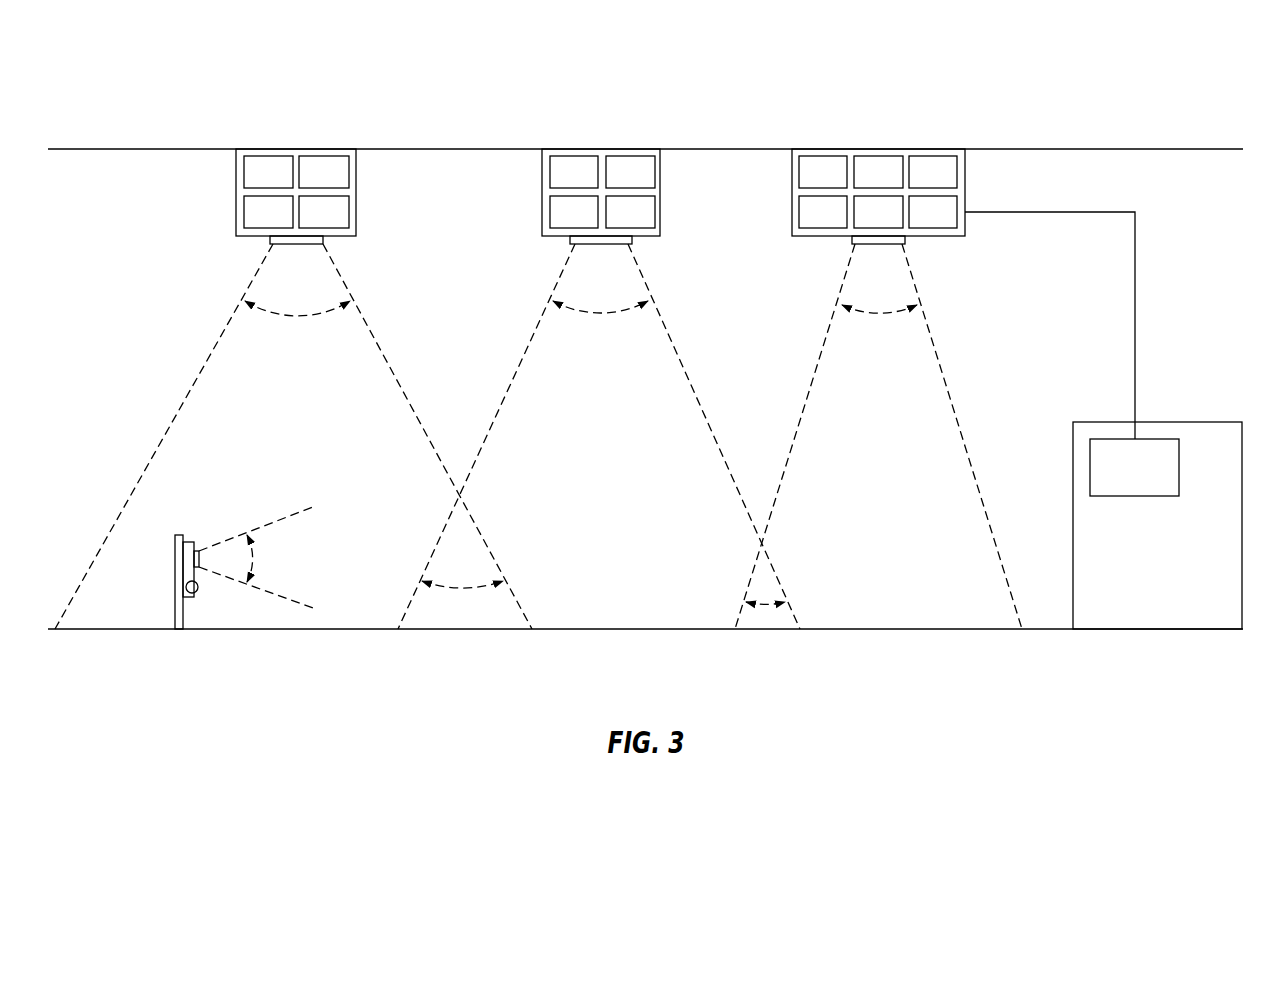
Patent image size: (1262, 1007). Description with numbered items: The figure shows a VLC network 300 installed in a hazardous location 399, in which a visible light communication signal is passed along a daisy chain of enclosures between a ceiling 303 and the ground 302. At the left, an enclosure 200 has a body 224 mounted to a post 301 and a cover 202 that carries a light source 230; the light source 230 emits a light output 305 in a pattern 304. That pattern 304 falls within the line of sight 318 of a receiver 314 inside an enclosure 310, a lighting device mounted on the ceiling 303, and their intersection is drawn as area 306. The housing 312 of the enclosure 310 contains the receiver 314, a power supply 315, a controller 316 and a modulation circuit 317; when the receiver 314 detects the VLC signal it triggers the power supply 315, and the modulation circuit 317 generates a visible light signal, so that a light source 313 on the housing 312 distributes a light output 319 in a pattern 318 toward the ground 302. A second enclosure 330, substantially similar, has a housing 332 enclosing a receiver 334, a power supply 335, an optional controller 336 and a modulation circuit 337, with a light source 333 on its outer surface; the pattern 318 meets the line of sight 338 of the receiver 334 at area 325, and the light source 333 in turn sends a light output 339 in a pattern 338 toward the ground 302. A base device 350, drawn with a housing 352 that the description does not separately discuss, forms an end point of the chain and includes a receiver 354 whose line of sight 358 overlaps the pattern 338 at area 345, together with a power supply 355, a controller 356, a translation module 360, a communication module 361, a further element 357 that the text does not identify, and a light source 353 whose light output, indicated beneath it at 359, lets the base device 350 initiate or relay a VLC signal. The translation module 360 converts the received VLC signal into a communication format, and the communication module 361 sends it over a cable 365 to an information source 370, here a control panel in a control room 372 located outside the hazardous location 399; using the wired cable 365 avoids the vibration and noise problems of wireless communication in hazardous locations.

The VLC network 300 is at (1158, 98).
The ground 302 is at (645, 630).
The ceiling 303 is at (428, 148).
The enclosure 310 is at (293, 357).
The housing 312 is at (236, 193).
The light source 313 is at (268, 238).
The receiver 314 is at (250, 185).
The power supply 315 is at (305, 185).
The controller 316 is at (250, 225).
The modulation circuit 317 is at (305, 225).
The pattern 318 is at (300, 316).
The light output 319 is at (274, 419).
The area 325 is at (462, 590).
The enclosure 330 is at (599, 357).
The housing 332 is at (542, 193).
The light source 333 is at (570, 238).
The receiver 334 is at (593, 185).
The power supply 335 is at (612, 185).
The controller 336 is at (593, 225).
The modulation circuit 337 is at (612, 225).
The pattern 338 is at (607, 316).
The light output 339 is at (579, 419).
The area 345 is at (767, 607).
The base device 350 is at (871, 357).
The third luminaire housing 352 is at (792, 193).
The light source 353 is at (852, 238).
The receiver 354 is at (842, 185).
The power supply 355 is at (860, 185).
The controller 356 is at (842, 225).
The light source 357 is at (860, 225).
The translation module 360 is at (952, 185).
The communication module 361 is at (952, 225).
The line of sight 358 is at (876, 318).
The third sensing zone 359 is at (857, 419).
The cable 365 is at (1135, 325).
The information source 370 is at (1114, 482).
The control room 372 is at (1105, 420).
The hazardous location 399 is at (487, 338).
The enclosure 200 is at (239, 579).
The cover 202 is at (188, 581).
The body 224 is at (190, 599).
The light source 230 is at (193, 550).
The post 301 is at (175, 553).
The pattern 304 is at (246, 558).
The light output 305 is at (277, 571).
The area 306 is at (326, 532).